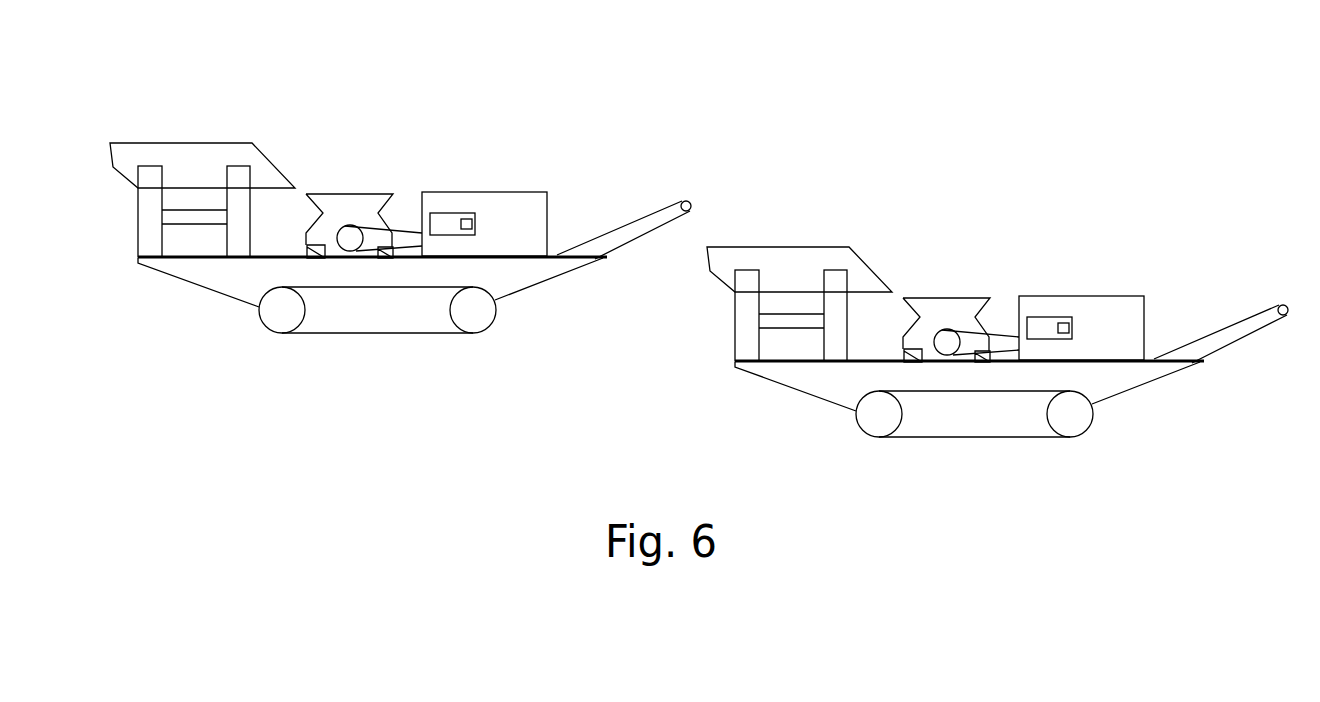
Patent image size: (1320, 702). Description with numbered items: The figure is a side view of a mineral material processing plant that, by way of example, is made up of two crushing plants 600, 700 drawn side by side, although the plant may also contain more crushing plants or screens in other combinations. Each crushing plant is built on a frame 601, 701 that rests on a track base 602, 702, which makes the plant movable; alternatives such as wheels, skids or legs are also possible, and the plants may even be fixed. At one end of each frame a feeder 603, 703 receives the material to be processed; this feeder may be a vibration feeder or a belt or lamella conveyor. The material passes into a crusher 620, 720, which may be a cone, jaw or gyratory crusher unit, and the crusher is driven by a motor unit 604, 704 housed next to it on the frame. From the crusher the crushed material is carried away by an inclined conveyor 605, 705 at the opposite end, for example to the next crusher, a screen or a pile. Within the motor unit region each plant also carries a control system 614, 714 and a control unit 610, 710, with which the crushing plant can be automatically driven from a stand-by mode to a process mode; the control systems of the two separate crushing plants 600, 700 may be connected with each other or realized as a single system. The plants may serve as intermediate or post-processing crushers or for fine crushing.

The crushing plant 600 is at (330, 86).
The frame 601 is at (525, 282).
The track base 602 is at (447, 333).
The feeder 603 is at (177, 145).
The motor unit 604 is at (521, 198).
The conveyor 605 is at (647, 230).
The control unit 610 is at (482, 210).
The control system 614 is at (443, 213).
The crusher 620 is at (368, 194).
The crushing plant 700 is at (913, 199).
The frame 701 is at (1120, 383).
The track base 702 is at (1042, 438).
The feeder 703 is at (775, 250).
The motor unit 704 is at (1118, 302).
The conveyor 705 is at (1245, 337).
The control unit 710 is at (1079, 314).
The control system 714 is at (1040, 317).
The crusher 720 is at (965, 298).